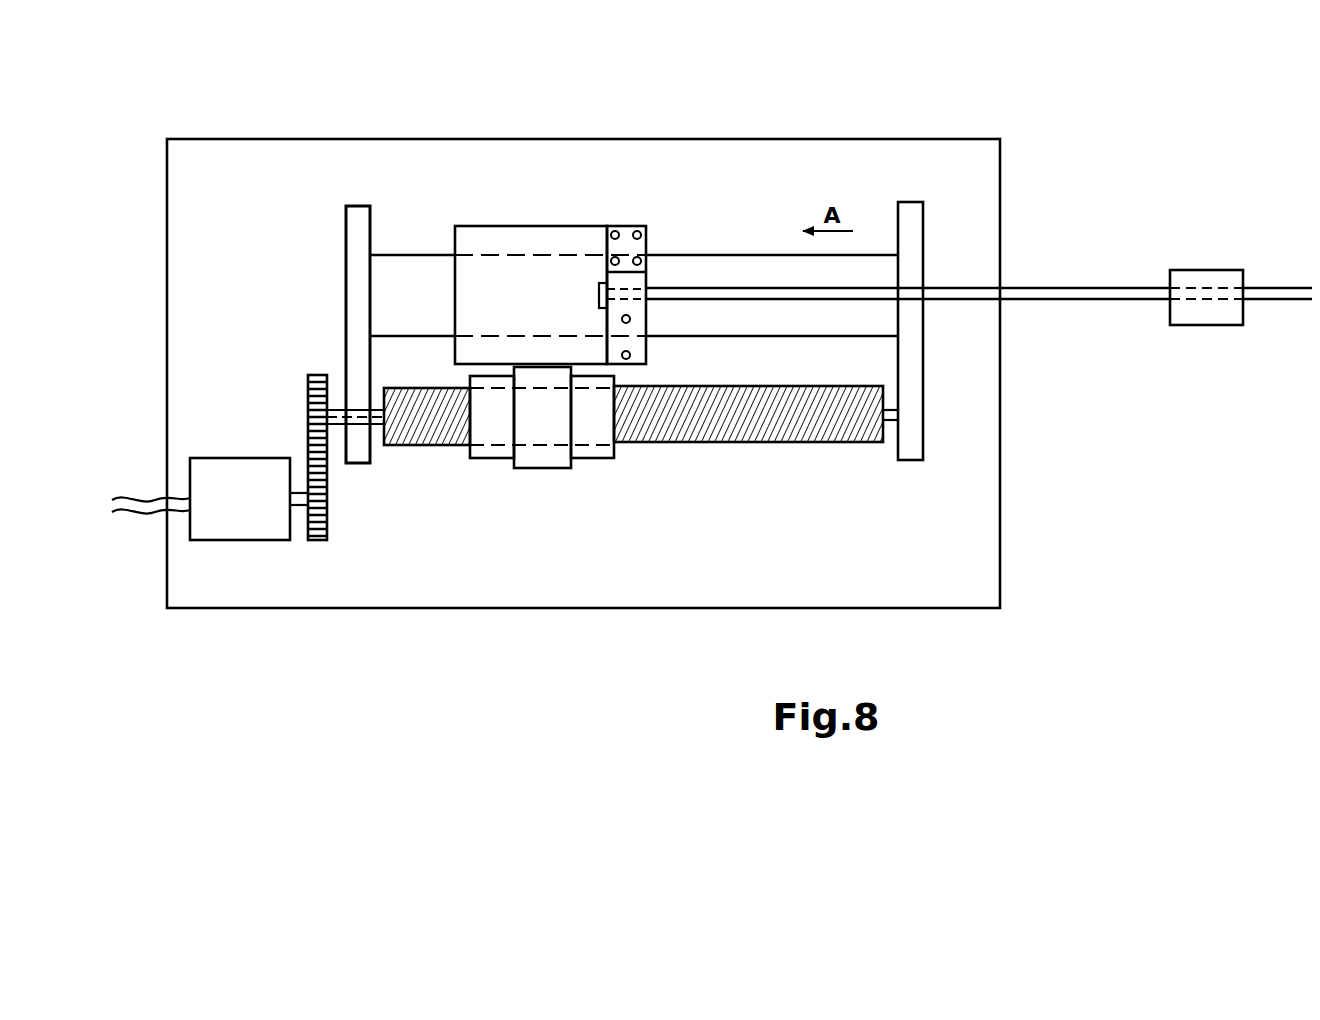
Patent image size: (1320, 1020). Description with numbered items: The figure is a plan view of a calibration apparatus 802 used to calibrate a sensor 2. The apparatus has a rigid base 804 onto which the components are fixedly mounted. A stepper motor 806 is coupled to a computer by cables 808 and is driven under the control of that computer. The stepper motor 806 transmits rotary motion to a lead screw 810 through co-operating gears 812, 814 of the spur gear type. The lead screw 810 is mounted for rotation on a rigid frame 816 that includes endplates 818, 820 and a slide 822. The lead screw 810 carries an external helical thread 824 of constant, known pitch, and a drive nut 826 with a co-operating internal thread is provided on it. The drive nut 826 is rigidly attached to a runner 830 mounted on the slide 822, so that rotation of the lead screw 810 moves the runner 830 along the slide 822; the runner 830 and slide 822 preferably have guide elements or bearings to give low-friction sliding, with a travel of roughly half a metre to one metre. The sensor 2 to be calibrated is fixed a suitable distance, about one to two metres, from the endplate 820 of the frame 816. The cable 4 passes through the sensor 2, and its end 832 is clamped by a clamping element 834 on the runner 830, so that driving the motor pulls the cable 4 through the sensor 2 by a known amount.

The sensor 2 is at (1221, 270).
The cable 4 is at (1060, 287).
The calibration apparatus 802 is at (459, 654).
The rigid base 804 is at (673, 609).
The stepper motor 806 is at (235, 541).
The cables 808 is at (138, 515).
The lead screw 810 is at (400, 447).
The gear 812 is at (327, 530).
The gear 814 is at (308, 392).
The rigid frame 816 is at (312, 201).
The endplate 818 is at (346, 238).
The endplate 820 is at (913, 228).
The slide 822 is at (409, 255).
The external helical thread 824 is at (745, 443).
The drive nut 826 is at (551, 470).
The runner 830 is at (521, 226).
The end 832 is at (634, 297).
The clamping element 834 is at (644, 277).